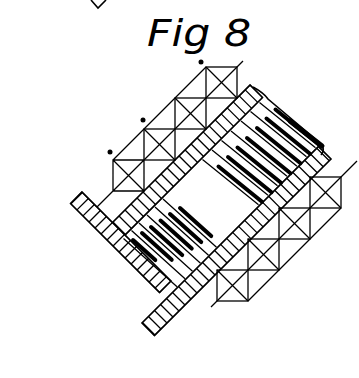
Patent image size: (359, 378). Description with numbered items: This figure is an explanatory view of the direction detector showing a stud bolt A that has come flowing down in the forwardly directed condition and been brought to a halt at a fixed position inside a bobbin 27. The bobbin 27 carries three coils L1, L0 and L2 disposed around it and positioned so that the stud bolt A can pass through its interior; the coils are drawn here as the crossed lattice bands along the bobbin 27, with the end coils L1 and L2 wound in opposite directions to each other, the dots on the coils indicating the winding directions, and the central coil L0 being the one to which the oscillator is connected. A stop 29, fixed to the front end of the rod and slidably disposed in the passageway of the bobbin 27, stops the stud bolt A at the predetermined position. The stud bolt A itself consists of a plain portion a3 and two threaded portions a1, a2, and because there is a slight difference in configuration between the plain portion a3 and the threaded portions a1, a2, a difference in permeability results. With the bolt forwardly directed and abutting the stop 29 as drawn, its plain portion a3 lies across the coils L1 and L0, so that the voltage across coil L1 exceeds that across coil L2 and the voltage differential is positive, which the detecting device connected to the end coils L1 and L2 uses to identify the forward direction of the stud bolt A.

The bobbin 27 is at (110, 190).
The stop 29 is at (84, 224).
The stud bolt A is at (284, 108).
The threaded portion a1 is at (207, 204).
The threaded portion a2 is at (292, 140).
The plain portion a3 is at (137, 262).
The central coil L0 is at (160, 113).
The end coil L1 is at (133, 147).
The end coil L2 is at (174, 89).